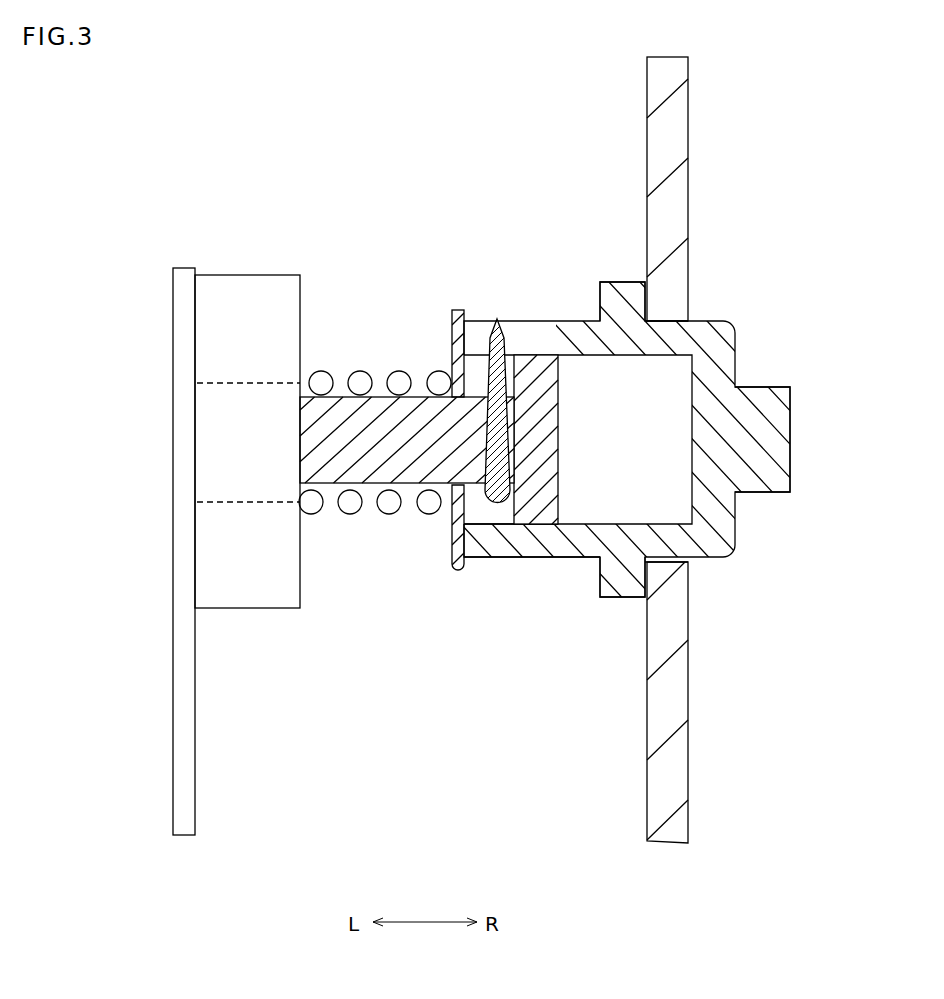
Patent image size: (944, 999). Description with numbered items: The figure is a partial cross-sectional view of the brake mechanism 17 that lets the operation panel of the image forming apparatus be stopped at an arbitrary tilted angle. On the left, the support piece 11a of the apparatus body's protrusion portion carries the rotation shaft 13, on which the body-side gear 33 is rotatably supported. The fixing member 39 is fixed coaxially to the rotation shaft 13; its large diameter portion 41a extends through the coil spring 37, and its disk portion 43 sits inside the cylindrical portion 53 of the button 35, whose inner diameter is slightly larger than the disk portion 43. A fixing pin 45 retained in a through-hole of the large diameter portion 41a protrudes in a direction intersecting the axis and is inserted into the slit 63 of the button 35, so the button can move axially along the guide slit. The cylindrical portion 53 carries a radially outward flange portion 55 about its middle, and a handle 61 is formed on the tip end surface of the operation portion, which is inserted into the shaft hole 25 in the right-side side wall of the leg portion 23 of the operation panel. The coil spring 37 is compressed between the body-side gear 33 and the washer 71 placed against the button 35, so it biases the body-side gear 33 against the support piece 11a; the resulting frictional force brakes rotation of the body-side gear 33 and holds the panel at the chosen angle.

The support piece 11a is at (178, 347).
The rotation shaft 13 is at (213, 442).
The brake mechanism 17 is at (391, 230).
The leg portion 23 is at (665, 195).
The shaft hole 25 is at (662, 328).
The body-side gear 33 is at (201, 379).
The button 35 is at (673, 460).
The coil spring 37 is at (349, 518).
The fixing member 39 is at (407, 552).
The large diameter portion 41a is at (376, 485).
The disk portion 43 is at (533, 490).
The fixing pin 45 is at (483, 322).
The cylindrical portion 53 is at (519, 545).
The flange portion 55 is at (617, 296).
The handle 61 is at (770, 437).
The slit 63 is at (550, 350).
The washer 71 is at (455, 578).